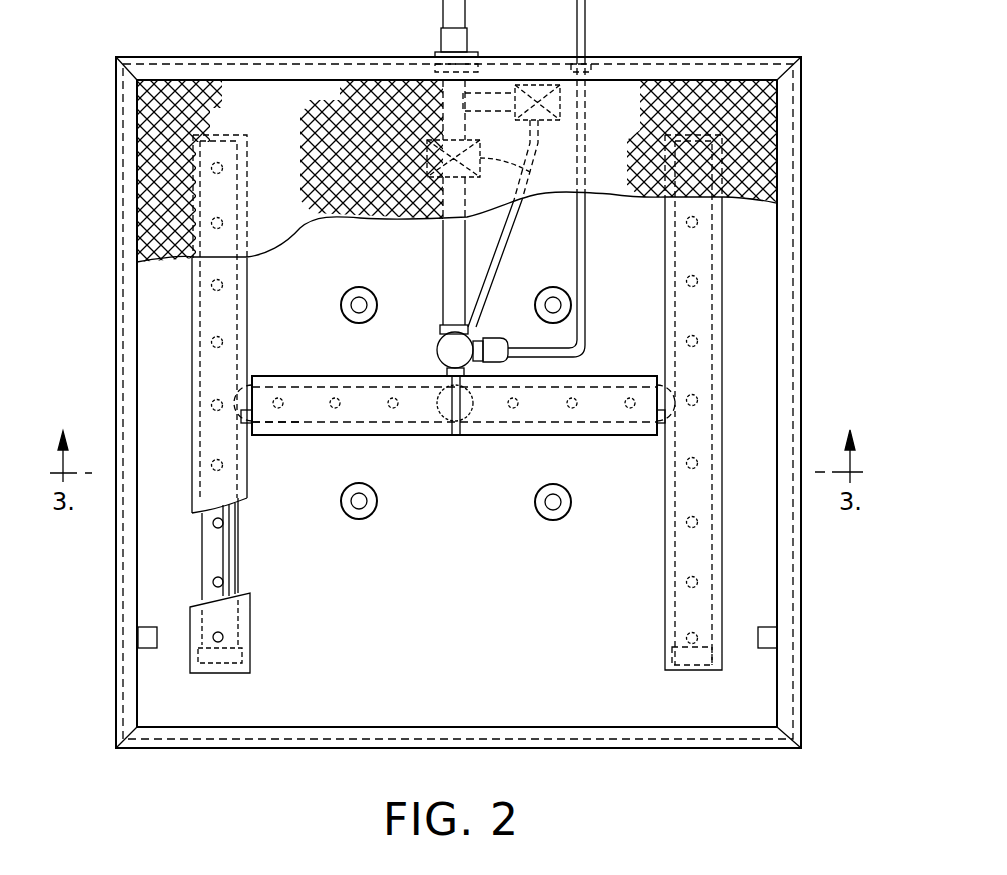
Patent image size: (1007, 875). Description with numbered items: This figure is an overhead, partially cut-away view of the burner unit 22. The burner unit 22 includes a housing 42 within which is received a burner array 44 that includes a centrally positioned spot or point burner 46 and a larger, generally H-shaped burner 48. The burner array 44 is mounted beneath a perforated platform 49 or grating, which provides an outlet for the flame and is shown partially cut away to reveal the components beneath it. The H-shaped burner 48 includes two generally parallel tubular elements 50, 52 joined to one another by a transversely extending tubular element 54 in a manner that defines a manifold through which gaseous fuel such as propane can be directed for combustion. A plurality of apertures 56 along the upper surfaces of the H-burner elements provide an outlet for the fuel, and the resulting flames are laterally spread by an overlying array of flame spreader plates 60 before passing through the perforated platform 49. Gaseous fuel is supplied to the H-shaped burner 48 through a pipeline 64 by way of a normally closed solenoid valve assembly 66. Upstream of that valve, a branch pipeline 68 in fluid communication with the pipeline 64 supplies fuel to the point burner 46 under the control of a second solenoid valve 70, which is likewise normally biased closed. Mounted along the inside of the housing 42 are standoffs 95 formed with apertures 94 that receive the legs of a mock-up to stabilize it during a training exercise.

The burner unit 22 is at (813, 93).
The housing 42 is at (803, 253).
The burner array 44 is at (435, 338).
The point burner 46 is at (435, 355).
The H-shaped burner 48 is at (262, 616).
The perforated platform 49 is at (357, 88).
The tubular element 50 is at (238, 535).
The tubular element 52 is at (665, 608).
The transversely extending tubular element 54 is at (593, 423).
The apertures 56 is at (226, 578).
The flame spreader plates 60 is at (277, 433).
The pipeline 64 is at (445, 245).
The solenoid valve assembly 66 is at (532, 172).
The branch pipeline 68 is at (495, 90).
The second solenoid valve 70 is at (547, 88).
The apertures 94 is at (355, 510).
The standoffs 95 is at (378, 507).